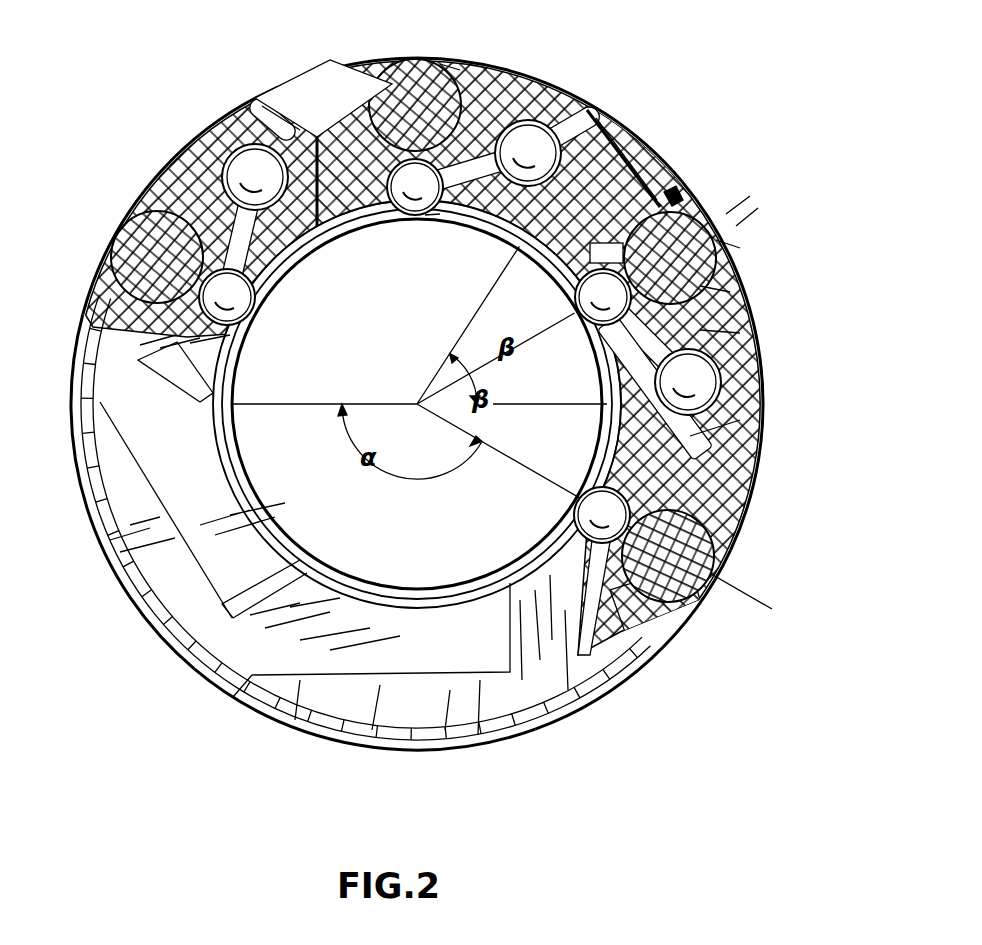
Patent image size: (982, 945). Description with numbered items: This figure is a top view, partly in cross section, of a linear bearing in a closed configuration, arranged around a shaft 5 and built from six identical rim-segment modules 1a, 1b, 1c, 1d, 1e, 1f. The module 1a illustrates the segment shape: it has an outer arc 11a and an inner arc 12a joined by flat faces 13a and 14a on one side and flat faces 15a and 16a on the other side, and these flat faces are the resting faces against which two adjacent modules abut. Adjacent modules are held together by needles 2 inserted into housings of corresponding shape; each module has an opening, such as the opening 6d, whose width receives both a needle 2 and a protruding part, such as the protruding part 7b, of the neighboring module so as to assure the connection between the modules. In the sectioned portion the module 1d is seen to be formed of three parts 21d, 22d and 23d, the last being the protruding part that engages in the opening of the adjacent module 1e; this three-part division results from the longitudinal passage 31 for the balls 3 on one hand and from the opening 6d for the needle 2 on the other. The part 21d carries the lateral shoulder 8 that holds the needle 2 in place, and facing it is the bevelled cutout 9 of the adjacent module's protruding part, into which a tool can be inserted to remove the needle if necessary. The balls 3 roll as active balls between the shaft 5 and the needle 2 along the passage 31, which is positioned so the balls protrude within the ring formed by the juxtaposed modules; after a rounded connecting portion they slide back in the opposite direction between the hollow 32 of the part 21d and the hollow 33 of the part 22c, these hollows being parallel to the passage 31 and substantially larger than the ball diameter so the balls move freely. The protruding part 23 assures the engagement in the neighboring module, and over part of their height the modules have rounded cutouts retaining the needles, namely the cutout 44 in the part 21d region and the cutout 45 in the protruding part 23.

The module 1a is at (122, 600).
The module 1b is at (535, 752).
The module 1c is at (655, 690).
The module 1d is at (790, 390).
The module 1e is at (590, 62).
The module 1f is at (142, 136).
The needle 2 is at (108, 248).
The ball 3 is at (216, 130).
The shaft 5 is at (416, 384).
The opening 6d is at (447, 64).
The protruding part 7b is at (318, 78).
The lateral shoulder 8 is at (722, 288).
The bevelled cutout 9 is at (680, 192).
The outer arc 11a is at (92, 534).
The inner arc 12a is at (346, 590).
The flat face 13a is at (232, 603).
The flat face 14a is at (152, 480).
The flat face 15a is at (414, 678).
The flat face 16a is at (506, 622).
The part 21d is at (742, 333).
The part 22c is at (738, 453).
The part 22d is at (612, 126).
The protruding part 23 is at (650, 165).
The part 23d is at (296, 100).
The passage 31 is at (437, 220).
The hollow 32 is at (545, 105).
The hollow 33 is at (742, 421).
The cutout 44 is at (738, 250).
The cutout 45 is at (760, 202).